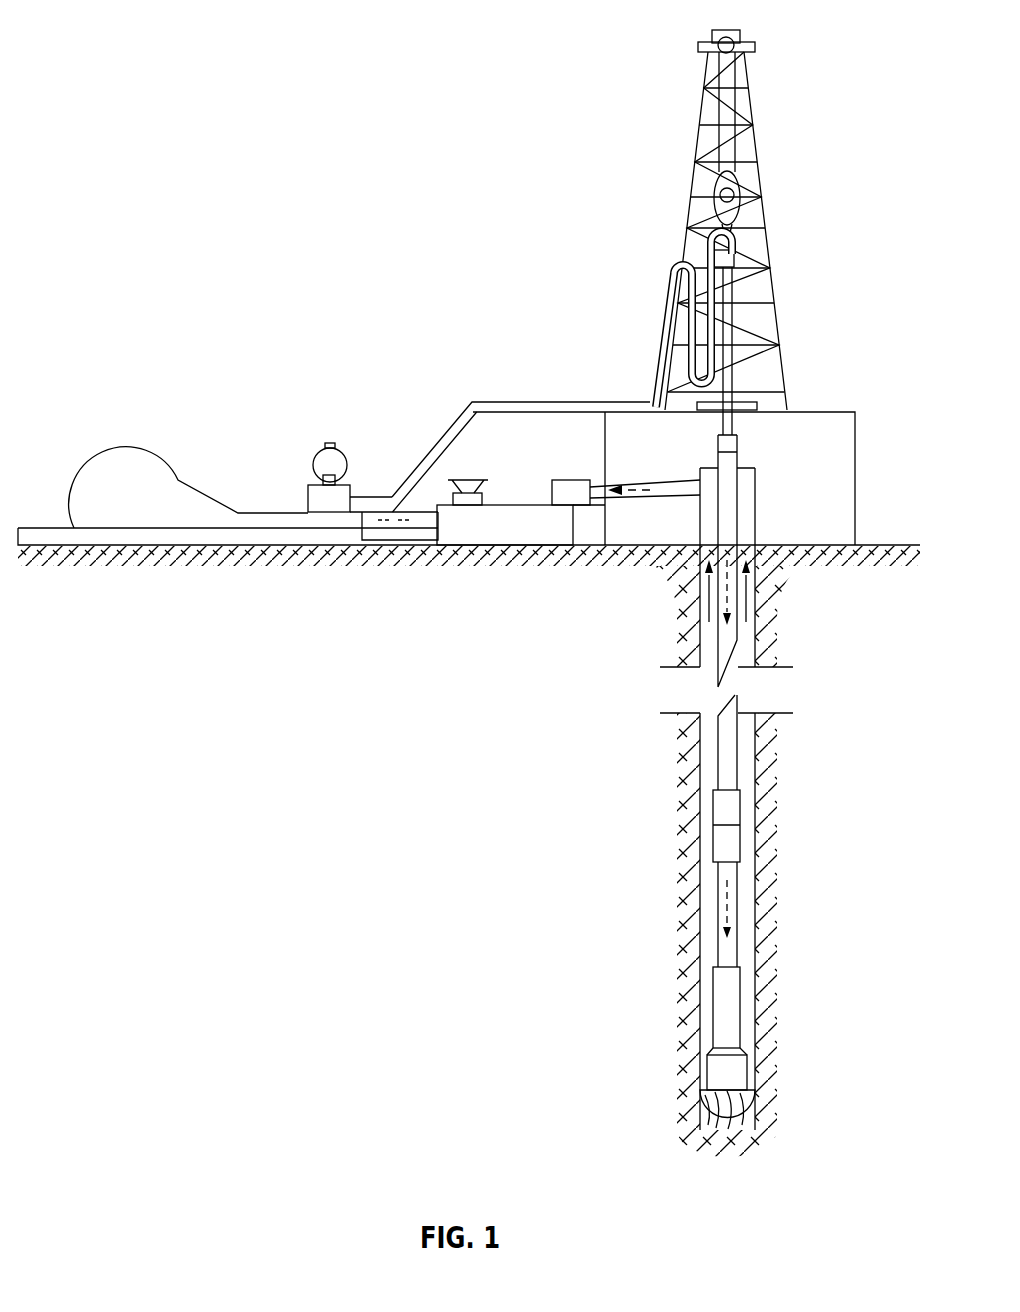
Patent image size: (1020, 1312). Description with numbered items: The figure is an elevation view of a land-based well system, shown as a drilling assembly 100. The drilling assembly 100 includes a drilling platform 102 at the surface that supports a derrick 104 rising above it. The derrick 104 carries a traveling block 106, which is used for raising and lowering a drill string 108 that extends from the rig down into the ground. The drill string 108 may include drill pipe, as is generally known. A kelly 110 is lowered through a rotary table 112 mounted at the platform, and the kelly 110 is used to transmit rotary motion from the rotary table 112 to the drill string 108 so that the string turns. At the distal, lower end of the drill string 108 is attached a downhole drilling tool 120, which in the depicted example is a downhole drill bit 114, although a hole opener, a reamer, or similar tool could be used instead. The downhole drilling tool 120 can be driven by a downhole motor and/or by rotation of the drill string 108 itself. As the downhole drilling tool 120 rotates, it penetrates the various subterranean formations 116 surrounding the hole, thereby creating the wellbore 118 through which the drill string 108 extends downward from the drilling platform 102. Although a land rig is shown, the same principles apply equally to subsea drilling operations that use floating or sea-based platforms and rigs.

The drilling assembly 100 is at (403, 34).
The drilling platform 102 is at (857, 433).
The derrick 104 is at (757, 150).
The traveling block 106 is at (742, 212).
The drill string 108 is at (730, 640).
The kelly 110 is at (732, 313).
The rotary table 112 is at (757, 407).
The downhole drill bit 114 is at (738, 1080).
The subterranean formations 116 is at (690, 850).
The wellbore 118 is at (773, 752).
The downhole drilling tool 120 is at (694, 1059).